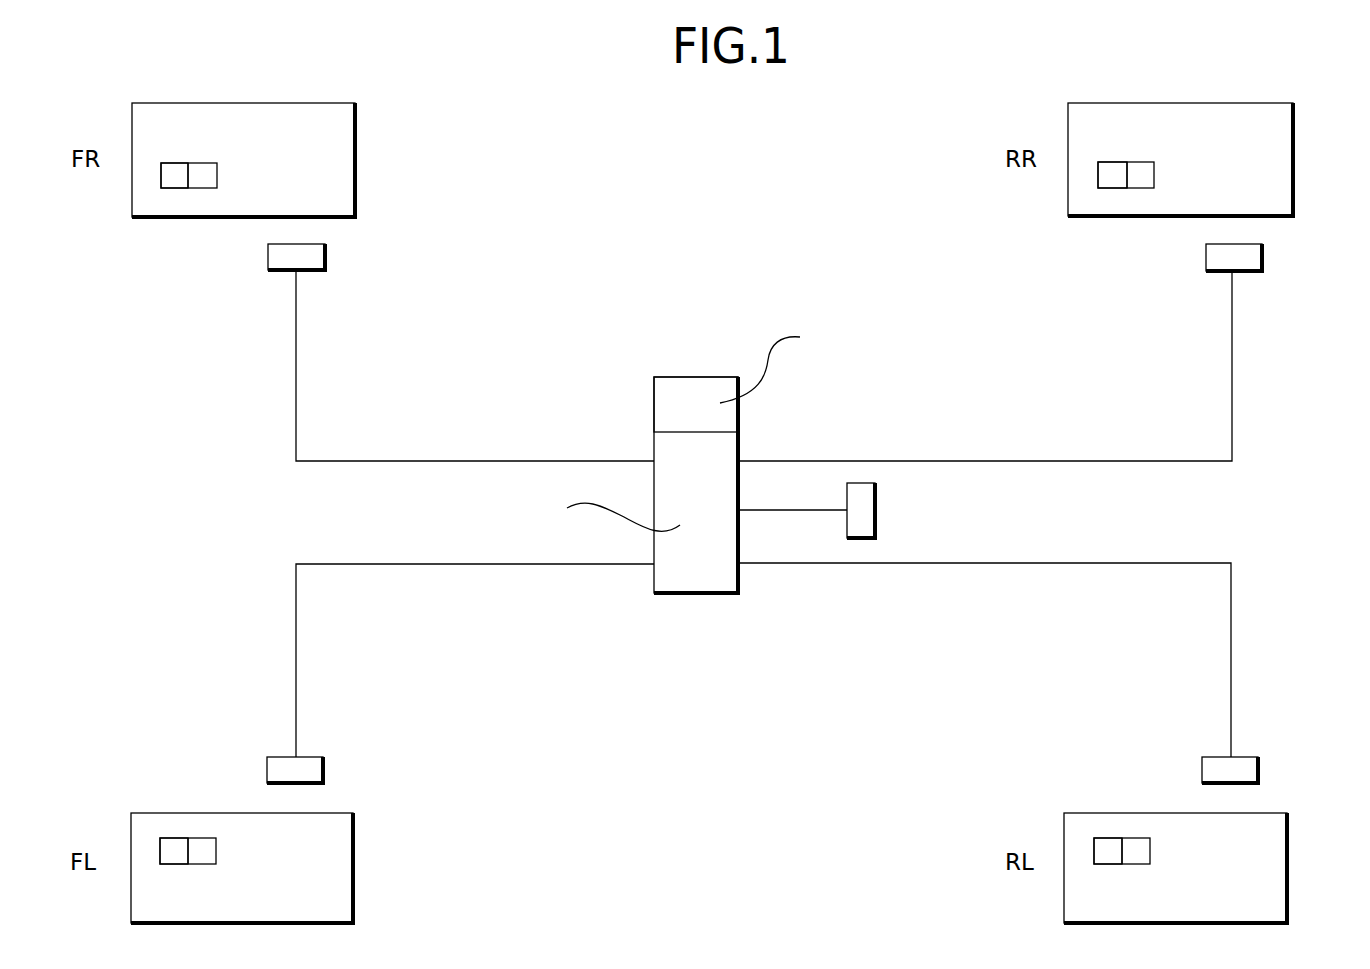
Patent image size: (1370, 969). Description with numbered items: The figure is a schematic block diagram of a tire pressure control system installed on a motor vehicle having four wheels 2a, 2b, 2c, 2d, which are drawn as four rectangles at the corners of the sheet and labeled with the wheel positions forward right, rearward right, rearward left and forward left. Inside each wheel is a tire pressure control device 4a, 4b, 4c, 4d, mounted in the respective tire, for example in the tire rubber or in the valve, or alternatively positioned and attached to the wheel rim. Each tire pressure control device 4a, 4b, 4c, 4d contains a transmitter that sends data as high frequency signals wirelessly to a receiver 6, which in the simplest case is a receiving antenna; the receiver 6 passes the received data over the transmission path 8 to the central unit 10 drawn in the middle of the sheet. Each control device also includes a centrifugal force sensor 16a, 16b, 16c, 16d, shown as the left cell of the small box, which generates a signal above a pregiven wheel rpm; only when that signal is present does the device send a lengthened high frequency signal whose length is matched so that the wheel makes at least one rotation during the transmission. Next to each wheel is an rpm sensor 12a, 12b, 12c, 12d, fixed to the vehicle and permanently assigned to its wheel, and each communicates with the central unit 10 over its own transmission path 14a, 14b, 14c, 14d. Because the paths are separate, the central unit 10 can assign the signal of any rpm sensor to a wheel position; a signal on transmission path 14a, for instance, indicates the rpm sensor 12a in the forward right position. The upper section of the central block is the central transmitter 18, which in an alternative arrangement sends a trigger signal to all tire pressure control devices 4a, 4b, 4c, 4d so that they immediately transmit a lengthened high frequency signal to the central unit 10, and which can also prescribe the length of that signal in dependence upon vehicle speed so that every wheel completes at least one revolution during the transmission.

The wheel 2a is at (343, 179).
The wheel 2b is at (1281, 179).
The wheel 2c is at (1275, 854).
The wheel 2d is at (341, 854).
The tire pressure control device 4a is at (210, 176).
The tire pressure control device 4b is at (1148, 176).
The tire pressure control device 4c is at (1143, 851).
The tire pressure control device 4d is at (209, 851).
The centrifugal force sensor 16a is at (170, 172).
The centrifugal force sensor 16b is at (1107, 172).
The centrifugal force sensor 16c is at (1102, 860).
The centrifugal force sensor 16d is at (168, 860).
The rpm sensor 12a is at (315, 256).
The rpm sensor 12b is at (1252, 256).
The rpm sensor 12c is at (1248, 770).
The rpm sensor 12d is at (313, 770).
The transmission path 14a is at (392, 461).
The transmission path 14b is at (1043, 461).
The transmission path 14c is at (1043, 563).
The transmission path 14d is at (392, 564).
The central unit 10 is at (695, 595).
The central transmitter 18 is at (680, 395).
The transmission path 8 is at (773, 513).
The receiver 6 is at (875, 510).